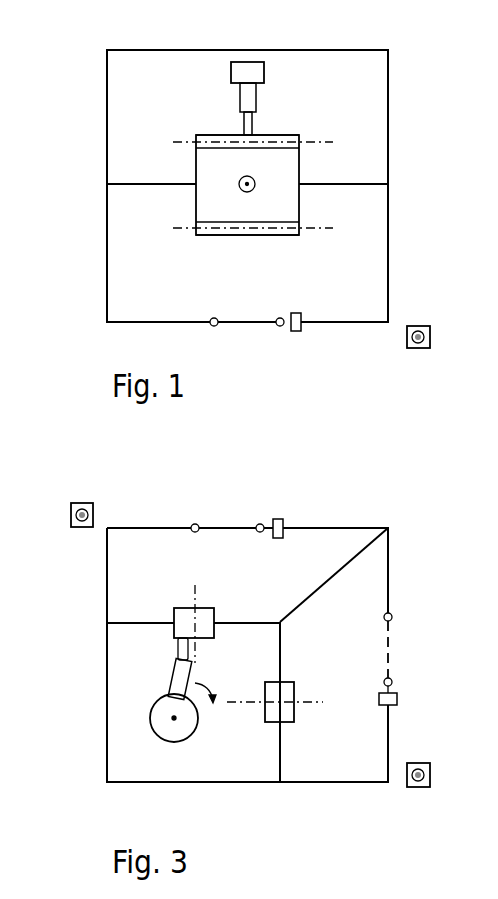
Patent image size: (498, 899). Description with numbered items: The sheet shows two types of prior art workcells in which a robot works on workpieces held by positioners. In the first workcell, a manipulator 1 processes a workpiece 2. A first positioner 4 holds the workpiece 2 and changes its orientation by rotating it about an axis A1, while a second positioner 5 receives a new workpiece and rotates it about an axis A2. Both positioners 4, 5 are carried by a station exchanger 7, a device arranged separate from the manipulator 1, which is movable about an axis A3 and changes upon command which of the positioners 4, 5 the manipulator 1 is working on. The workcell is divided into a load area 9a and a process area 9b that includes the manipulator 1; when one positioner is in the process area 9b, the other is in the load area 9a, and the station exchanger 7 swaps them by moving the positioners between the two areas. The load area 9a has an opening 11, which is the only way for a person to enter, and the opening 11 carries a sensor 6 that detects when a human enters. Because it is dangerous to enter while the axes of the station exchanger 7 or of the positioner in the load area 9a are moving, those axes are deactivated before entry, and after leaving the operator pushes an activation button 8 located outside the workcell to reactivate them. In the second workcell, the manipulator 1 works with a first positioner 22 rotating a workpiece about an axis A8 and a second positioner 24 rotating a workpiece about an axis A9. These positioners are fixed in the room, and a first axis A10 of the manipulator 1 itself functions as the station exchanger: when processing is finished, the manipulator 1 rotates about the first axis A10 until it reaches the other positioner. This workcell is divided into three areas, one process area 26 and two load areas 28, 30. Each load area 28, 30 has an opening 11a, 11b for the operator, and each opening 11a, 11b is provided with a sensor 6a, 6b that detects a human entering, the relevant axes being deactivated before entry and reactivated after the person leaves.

In FIG. 1, the manipulator 1 is at (255, 70).
In FIG. 1, the workpiece 2 is at (222, 143).
In FIG. 1, the first positioner 4 is at (302, 140).
In FIG. 1, the second positioner 5 is at (300, 240).
In FIG. 1, the sensor 6 is at (297, 331).
In FIG. 1, the station exchanger 7 is at (278, 196).
In FIG. 1, the activation button 8 is at (417, 349).
In FIG. 3, the activation button 8 is at (95, 505).
In FIG. 1, the load area 9a is at (350, 292).
In FIG. 1, the process area 9b is at (338, 62).
In FIG. 1, the opening 11 is at (257, 325).
In FIG. 1, the axis A1 is at (333, 141).
In FIG. 1, the axis A2 is at (333, 229).
In FIG. 1, the axis A3 is at (257, 181).
In FIG. 3, the opening 11a is at (234, 526).
In FIG. 3, the opening 11b is at (392, 650).
In FIG. 3, the sensor 6a is at (282, 518).
In FIG. 3, the sensor 6b is at (400, 699).
In FIG. 3, the first positioner 22 is at (200, 620).
In FIG. 3, the second positioner 24 is at (295, 690).
In FIG. 3, the process area 26 is at (243, 755).
In FIG. 3, the load area 28 is at (338, 540).
In FIG. 3, the load area 30 is at (362, 575).
In FIG. 3, the axis A8 is at (190, 595).
In FIG. 3, the axis A9 is at (312, 703).
In FIG. 3, the first axis A10 is at (174, 722).